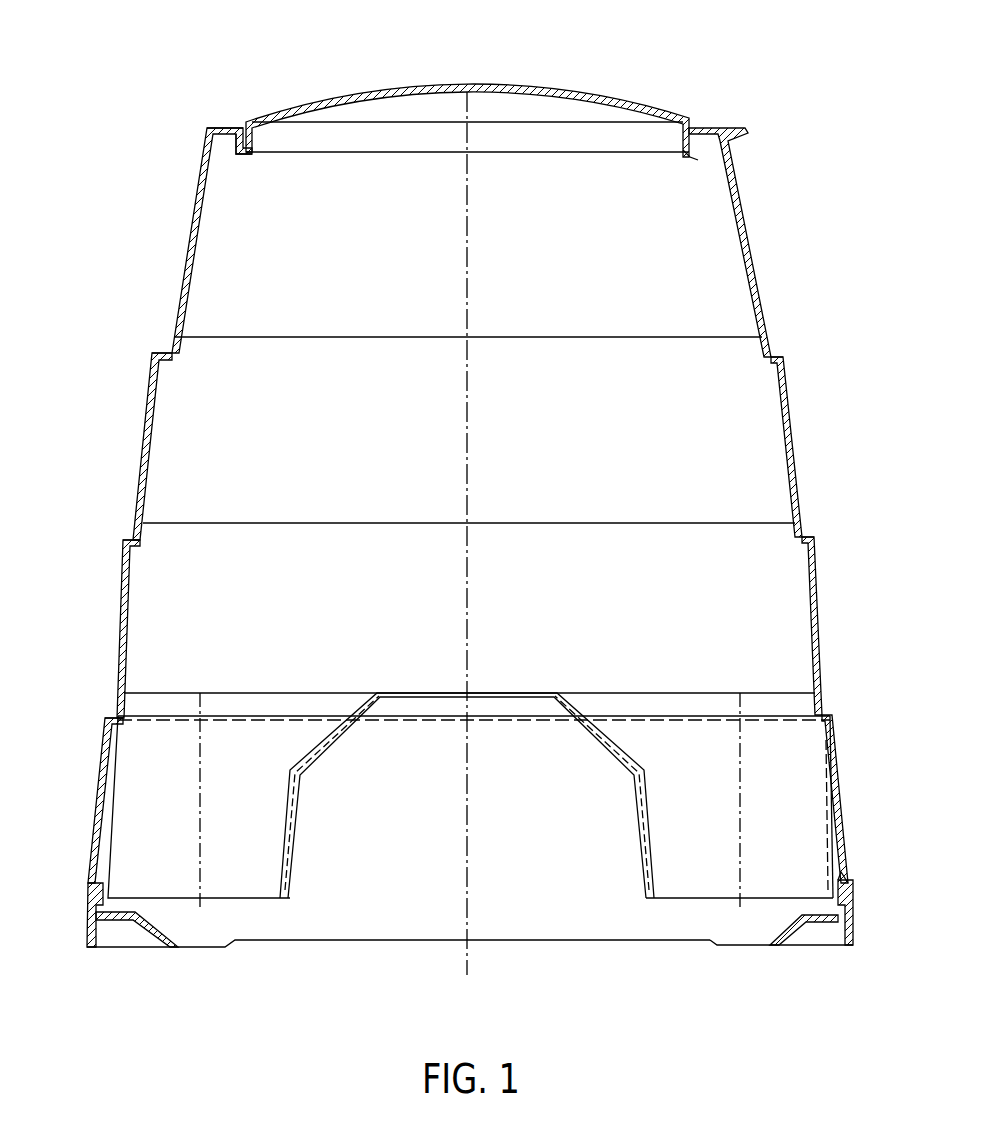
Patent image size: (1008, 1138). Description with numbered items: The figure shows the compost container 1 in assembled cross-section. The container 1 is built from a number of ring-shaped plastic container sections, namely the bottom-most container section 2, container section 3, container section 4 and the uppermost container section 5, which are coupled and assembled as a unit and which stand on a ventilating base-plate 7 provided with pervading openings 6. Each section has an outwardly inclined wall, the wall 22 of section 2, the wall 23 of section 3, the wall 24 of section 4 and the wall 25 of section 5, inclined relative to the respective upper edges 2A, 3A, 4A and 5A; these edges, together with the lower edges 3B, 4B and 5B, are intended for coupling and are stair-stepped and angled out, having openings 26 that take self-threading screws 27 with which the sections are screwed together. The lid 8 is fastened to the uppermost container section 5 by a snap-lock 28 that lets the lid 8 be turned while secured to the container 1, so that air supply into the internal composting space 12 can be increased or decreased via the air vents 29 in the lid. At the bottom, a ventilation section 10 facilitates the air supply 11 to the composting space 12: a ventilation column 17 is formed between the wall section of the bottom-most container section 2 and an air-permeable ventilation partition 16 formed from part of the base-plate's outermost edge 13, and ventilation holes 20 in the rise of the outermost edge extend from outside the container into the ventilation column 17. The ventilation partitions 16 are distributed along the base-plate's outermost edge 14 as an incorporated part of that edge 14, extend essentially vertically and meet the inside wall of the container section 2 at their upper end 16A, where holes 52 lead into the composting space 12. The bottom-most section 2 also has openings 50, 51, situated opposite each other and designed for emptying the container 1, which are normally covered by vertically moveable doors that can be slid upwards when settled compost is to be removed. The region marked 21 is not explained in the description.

The compost container 1 is at (606, 75).
The lid 8 is at (330, 87).
The air vents 29 is at (242, 125).
The snap-lock 28 is at (690, 163).
The upper edge of container section 5 5A is at (205, 162).
The uppermost container section 5 is at (208, 208).
The outwardly inclined wall of section 5 25 is at (187, 237).
The coupling edge of section 5 5B is at (178, 318).
The upper edge of container section 4 4A is at (147, 387).
The container section 4 is at (145, 423).
The outwardly inclined wall of section 4 24 is at (140, 480).
The openings 26 is at (778, 352).
The coupling edge of section 4 4B is at (143, 510).
The upper edge of container section 3 3A is at (122, 555).
The container section 3 is at (130, 582).
The outwardly inclined wall of section 3 23 is at (117, 630).
The self-threading screws 27 is at (803, 538).
The coupling edge of section 3 3B is at (123, 682).
The upper edge of container section 2 2A is at (100, 740).
The bottom-most container section 2 is at (110, 777).
The outwardly inclined wall of section 2 22 is at (103, 860).
The ventilating base-plate 7 is at (249, 955).
The lower wall region 21 is at (72, 884).
The pervading openings 6 is at (345, 943).
The ventilation holes 20 is at (853, 947).
The outermost edge of the base-plate 13 is at (820, 923).
The air supply 11 is at (845, 905).
The ventilation column 17 is at (845, 870).
The internal composting space 12 is at (790, 821).
The ventilation partition 16 is at (833, 863).
The upper end of the ventilation partition 16A is at (833, 770).
The holes 52 is at (832, 797).
The ventilation section 10 is at (858, 783).
The outermost edge of the base-plate 14 is at (860, 850).
The emptying opening 50 is at (467, 850).
The emptying opening 51 is at (573, 928).